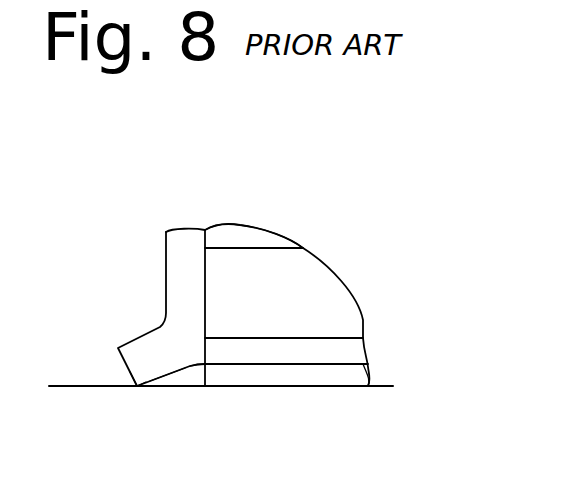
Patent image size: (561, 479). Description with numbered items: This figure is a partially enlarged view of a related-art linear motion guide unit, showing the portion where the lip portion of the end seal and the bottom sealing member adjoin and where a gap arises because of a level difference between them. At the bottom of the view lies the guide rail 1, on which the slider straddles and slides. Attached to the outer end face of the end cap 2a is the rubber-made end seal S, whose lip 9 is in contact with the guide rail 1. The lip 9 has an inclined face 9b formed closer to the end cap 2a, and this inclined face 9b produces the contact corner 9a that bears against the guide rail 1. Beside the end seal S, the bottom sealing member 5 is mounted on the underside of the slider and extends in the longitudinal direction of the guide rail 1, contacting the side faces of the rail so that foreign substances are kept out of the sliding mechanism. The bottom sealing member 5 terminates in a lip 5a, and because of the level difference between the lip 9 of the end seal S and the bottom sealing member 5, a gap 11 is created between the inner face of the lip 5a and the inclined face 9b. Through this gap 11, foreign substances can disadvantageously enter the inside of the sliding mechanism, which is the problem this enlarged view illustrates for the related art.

The guide rail 1 is at (324, 397).
The end seal S is at (183, 224).
The lip 9 is at (152, 337).
The contact corner 9a is at (140, 377).
The inclined face 9b is at (173, 372).
The gap 11 is at (200, 375).
The bottom sealing member 5 is at (303, 267).
The end cap 2a is at (240, 237).
The lip of bottom sealing member 5a is at (370, 375).